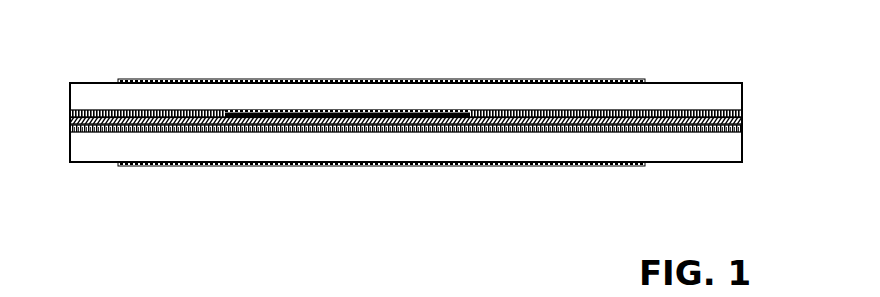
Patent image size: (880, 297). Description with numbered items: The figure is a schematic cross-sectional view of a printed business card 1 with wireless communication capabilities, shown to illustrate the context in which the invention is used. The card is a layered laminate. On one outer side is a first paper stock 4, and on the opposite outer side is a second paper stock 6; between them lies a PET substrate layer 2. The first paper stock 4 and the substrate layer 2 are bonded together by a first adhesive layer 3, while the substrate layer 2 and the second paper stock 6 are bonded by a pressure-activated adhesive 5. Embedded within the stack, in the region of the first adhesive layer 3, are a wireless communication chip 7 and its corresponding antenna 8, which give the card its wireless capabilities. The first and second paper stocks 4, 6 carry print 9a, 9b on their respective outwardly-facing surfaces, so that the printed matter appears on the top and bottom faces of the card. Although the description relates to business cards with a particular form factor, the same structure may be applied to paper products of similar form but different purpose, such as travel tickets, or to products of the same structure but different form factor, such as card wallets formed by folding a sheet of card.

The business card 1 is at (782, 136).
The PET substrate layer 2 is at (72, 121).
The first adhesive layer 3 is at (73, 112).
The first paper stock 4 is at (75, 97).
The pressure-activated adhesive 5 is at (87, 131).
The second paper stock 6 is at (86, 155).
The wireless communication chip 7 is at (224, 111).
The antenna 8 is at (290, 110).
The print 9a is at (140, 78).
The print 9b is at (147, 166).